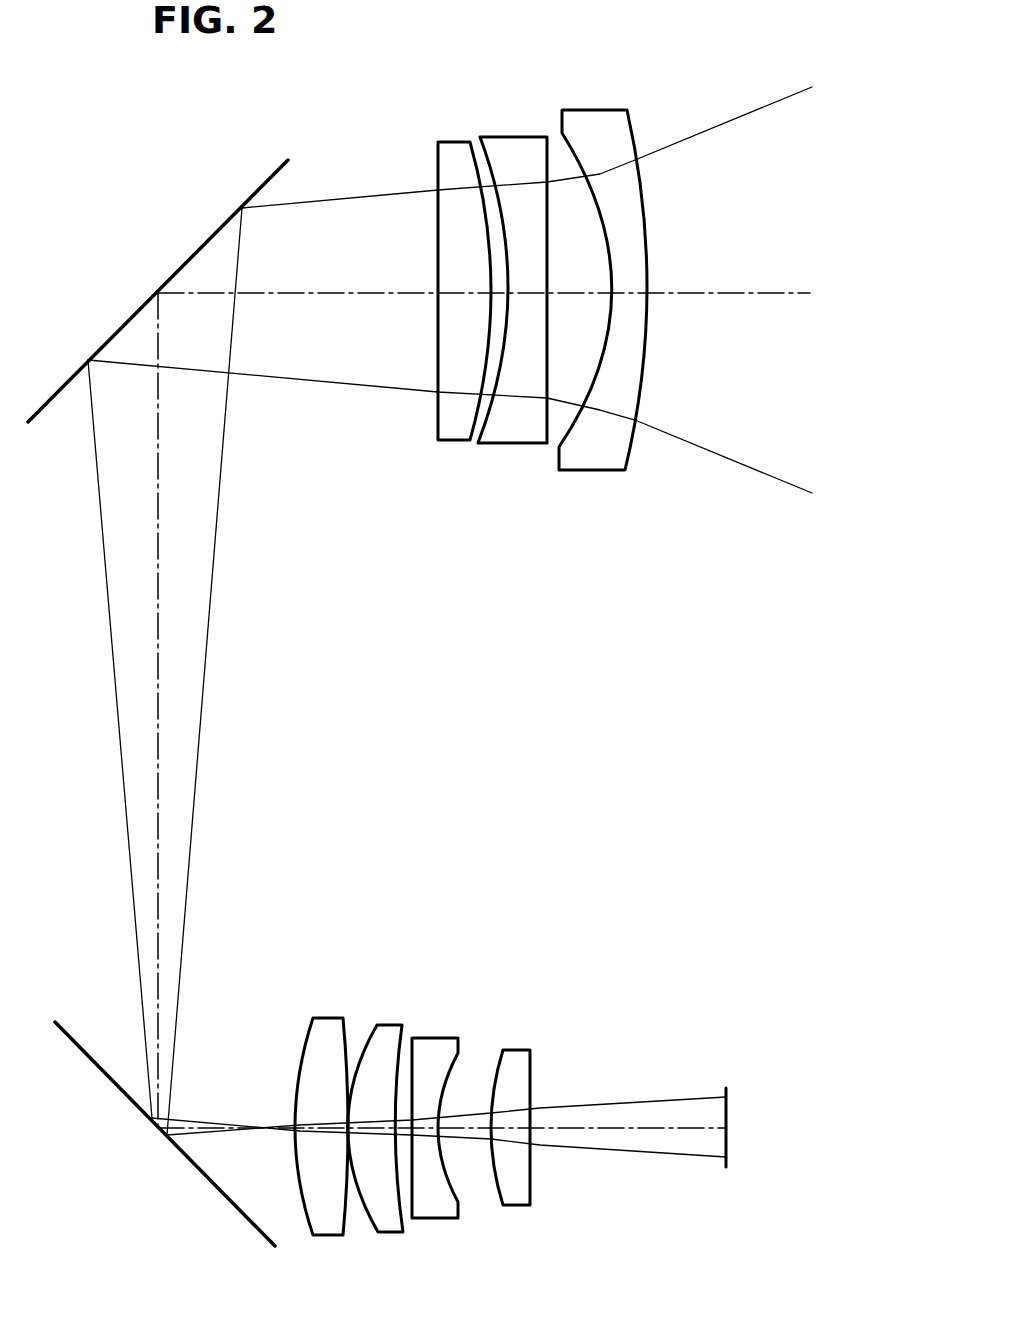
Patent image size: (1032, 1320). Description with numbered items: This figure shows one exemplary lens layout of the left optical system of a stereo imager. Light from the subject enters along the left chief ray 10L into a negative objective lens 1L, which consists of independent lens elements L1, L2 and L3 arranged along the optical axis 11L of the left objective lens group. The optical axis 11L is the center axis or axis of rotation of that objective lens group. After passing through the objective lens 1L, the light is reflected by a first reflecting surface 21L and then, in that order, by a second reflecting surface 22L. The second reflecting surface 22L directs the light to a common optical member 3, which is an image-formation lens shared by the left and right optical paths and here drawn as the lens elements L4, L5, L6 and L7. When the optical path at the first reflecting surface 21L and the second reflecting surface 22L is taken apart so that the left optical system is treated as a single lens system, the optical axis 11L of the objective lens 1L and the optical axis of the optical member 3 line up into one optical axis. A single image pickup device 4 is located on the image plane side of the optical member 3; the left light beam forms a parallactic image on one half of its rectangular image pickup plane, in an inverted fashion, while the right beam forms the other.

The left objective lens group 1L is at (541, 235).
The lens element L1 is at (603, 261).
The lens element L2 is at (510, 137).
The lens element L3 is at (455, 142).
The first reflecting surface 21L is at (213, 237).
The second reflecting surface 22L is at (222, 1195).
The optical axis of left objective lens group 11L is at (725, 294).
The left chief ray 10L is at (725, 294).
The common optical member 3 is at (415, 1066).
The lens element L4 is at (328, 1018).
The lens element L5 is at (392, 1025).
The lens element L6 is at (437, 1038).
The lens element L7 is at (510, 1077).
The image pickup device 4 is at (727, 1147).